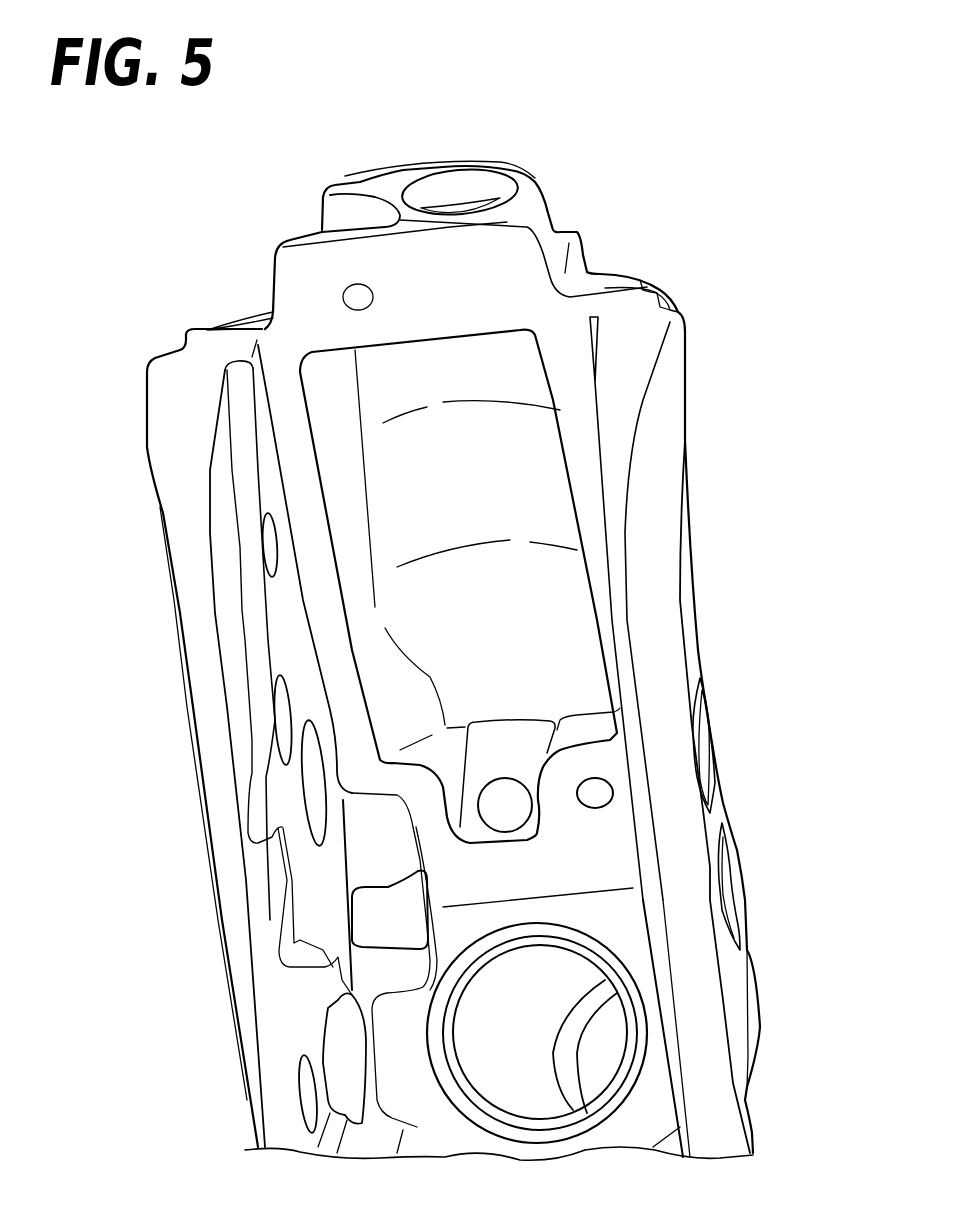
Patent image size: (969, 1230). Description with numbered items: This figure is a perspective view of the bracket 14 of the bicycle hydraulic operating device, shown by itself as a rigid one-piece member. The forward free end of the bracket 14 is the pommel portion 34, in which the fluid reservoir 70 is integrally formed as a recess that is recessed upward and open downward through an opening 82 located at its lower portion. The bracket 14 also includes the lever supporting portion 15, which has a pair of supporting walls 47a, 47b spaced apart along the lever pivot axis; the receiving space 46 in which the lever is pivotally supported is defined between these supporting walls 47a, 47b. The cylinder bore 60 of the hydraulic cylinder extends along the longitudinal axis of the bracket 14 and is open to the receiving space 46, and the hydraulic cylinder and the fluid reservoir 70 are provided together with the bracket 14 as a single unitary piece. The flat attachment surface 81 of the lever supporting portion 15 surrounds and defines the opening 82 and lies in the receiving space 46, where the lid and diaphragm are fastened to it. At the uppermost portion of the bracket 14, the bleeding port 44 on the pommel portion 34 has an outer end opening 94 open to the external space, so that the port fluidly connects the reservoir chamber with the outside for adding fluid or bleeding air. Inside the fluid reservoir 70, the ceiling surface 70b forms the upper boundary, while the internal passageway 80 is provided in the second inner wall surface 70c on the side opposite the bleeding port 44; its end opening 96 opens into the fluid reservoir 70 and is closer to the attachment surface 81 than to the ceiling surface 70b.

The bracket 14 is at (705, 258).
The lever supporting portion 15 is at (140, 415).
The pommel portion 34 is at (637, 272).
The bleeding port 44 is at (430, 193).
The receiving space 46 is at (290, 390).
The supporting wall 47a is at (197, 578).
The supporting wall 47b is at (613, 513).
The cylinder bore 60 is at (525, 997).
The fluid reservoir 70 is at (321, 328).
The ceiling surface 70b is at (455, 643).
The second inner wall surface 70c is at (517, 740).
The internal passageway 80 is at (493, 798).
The attachment surface 81 is at (610, 850).
The opening 82 is at (547, 414).
The outer end opening 94 is at (482, 166).
The end opening 96 is at (530, 827).